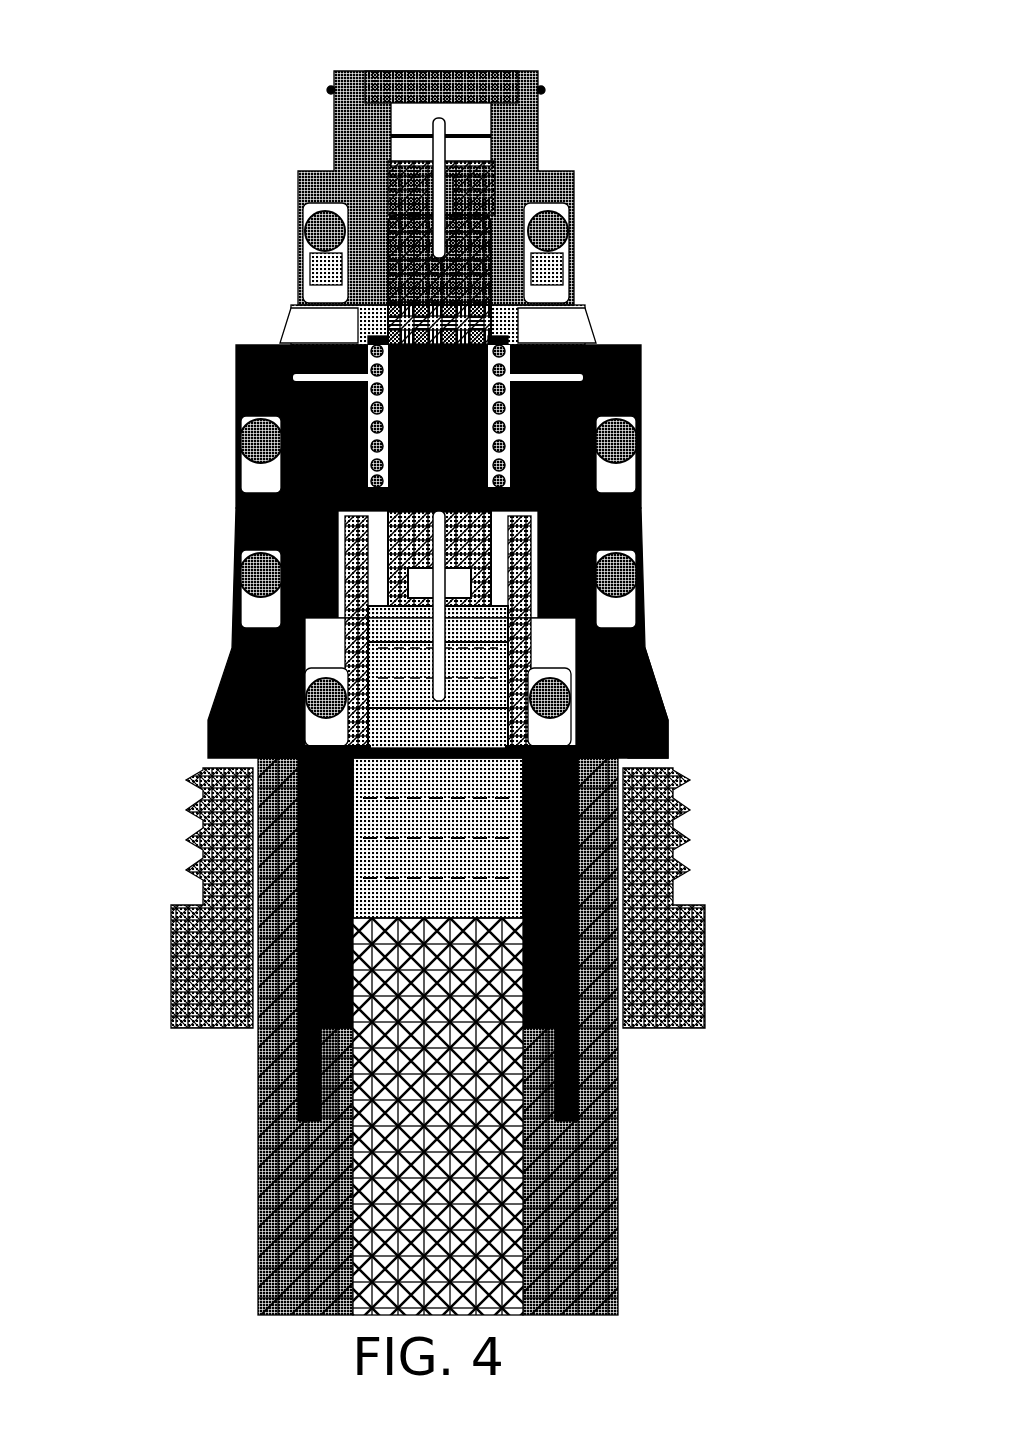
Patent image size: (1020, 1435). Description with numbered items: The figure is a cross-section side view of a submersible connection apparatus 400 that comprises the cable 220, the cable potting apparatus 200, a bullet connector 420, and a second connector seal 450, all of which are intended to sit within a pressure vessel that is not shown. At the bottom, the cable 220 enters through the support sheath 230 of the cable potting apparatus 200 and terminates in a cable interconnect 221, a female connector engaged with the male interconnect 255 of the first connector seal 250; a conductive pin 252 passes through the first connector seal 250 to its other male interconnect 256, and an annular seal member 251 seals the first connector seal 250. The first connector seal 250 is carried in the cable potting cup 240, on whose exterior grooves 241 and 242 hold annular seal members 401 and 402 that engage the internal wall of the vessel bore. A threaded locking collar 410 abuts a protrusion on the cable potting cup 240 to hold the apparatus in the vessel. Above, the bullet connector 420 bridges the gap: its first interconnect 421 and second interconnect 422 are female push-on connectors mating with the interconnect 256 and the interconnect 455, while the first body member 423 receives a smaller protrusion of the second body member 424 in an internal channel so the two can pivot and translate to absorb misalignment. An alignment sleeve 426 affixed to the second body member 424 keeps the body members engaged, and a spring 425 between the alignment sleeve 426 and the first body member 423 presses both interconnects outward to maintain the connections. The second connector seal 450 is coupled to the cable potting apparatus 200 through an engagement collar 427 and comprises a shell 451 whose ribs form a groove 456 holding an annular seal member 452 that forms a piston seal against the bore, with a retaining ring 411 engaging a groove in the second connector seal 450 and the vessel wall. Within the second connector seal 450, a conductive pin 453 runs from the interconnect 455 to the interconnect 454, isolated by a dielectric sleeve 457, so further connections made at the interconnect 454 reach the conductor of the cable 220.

The submersible connection apparatus 400 is at (172, 46).
The second connector seal 450 is at (553, 129).
The shell 451 is at (533, 178).
The interconnect 454 is at (460, 73).
The conductive pin 453 is at (428, 130).
The retaining ring 411 is at (323, 83).
The dielectric sleeve 457 is at (415, 177).
The annular seal member 452 is at (317, 223).
The groove 456 is at (305, 260).
The interconnect 455 is at (460, 257).
The first interconnect 421 is at (440, 290).
The bullet connector 420 is at (386, 297).
The first body member 423 is at (447, 370).
The engagement collar 427 is at (320, 315).
The spring 425 is at (497, 353).
The alignment sleeve 426 is at (480, 390).
The annular seal member 401 is at (610, 430).
The groove 241 is at (238, 470).
The second body member 424 is at (447, 490).
The second interconnect 422 is at (460, 527).
The interconnect 256 is at (410, 550).
The annular seal member 402 is at (613, 563).
The groove 242 is at (238, 603).
The conductive pin 252 is at (437, 685).
The first connector seal 250 is at (373, 630).
The cable potting cup 240 is at (613, 705).
The interconnect 255 is at (397, 683).
The cable potting apparatus 200 is at (665, 715).
The annular seal member 251 is at (300, 693).
The cable interconnect 221 is at (463, 712).
The locking collar 410 is at (627, 933).
The cable 220 is at (462, 1200).
The support sheath 230 is at (282, 1227).